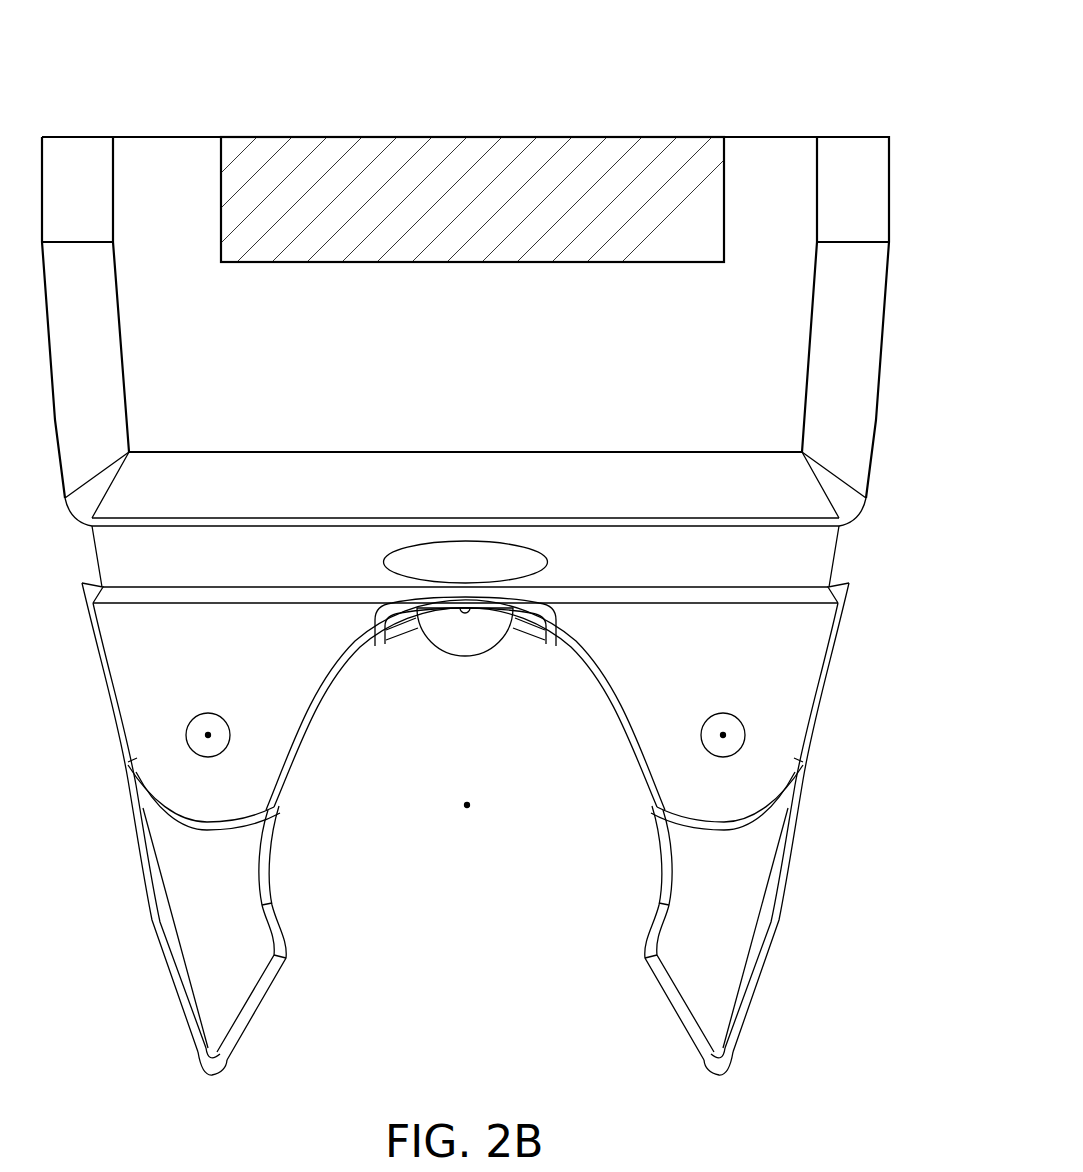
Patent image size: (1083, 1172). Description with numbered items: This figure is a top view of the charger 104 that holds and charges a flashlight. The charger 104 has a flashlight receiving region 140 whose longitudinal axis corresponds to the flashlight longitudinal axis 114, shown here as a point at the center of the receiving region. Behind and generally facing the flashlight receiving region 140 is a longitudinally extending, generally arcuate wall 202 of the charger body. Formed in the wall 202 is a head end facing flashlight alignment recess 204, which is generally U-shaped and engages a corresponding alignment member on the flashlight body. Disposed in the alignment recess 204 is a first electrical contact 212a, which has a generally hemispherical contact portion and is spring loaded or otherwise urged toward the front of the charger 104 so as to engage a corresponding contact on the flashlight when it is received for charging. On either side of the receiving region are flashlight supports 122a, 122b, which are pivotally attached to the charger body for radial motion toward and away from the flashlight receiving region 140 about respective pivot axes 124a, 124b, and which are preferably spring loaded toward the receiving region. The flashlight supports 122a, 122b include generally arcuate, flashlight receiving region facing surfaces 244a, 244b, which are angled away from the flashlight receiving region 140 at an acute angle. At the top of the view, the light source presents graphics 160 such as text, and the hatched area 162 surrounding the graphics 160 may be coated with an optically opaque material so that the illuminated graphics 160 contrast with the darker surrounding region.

The charger 104 is at (718, 88).
The area surrounding the graphics 162 is at (243, 144).
The graphics 160 is at (348, 185).
The arcuate wall 202 is at (613, 718).
The flashlight receiving region 140 is at (417, 804).
The flashlight support 122b is at (247, 929).
The flashlight support 122a is at (740, 929).
The flashlight receiving region facing surface 244b is at (300, 882).
The flashlight receiving region facing surface 244a is at (632, 885).
The first electrical contact 212a is at (443, 650).
The flashlight alignment recess 204 is at (523, 640).
The pivot axis 124b is at (208, 735).
The pivot axis 124a is at (723, 735).
The longitudinal axis 114 is at (467, 805).